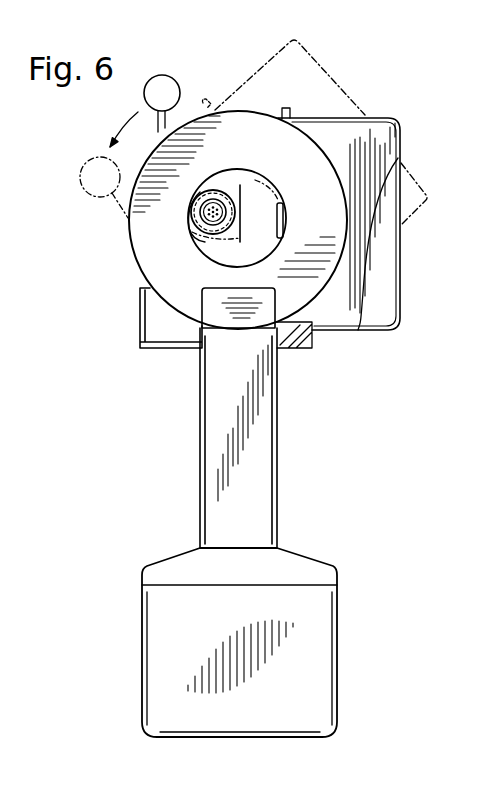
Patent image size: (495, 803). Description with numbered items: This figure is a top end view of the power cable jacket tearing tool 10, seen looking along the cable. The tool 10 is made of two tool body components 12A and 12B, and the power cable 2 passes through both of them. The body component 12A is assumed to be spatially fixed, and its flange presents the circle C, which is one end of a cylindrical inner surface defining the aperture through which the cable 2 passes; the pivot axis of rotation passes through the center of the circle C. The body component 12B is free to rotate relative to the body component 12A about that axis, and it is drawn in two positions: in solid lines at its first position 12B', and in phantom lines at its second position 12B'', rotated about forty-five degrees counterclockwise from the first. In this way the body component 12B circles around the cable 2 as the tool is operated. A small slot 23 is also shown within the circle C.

The power cable jacket tearing tool 10 is at (240, 95).
The tool body component 12A is at (313, 445).
The tool body component 12B is at (356, 254).
The first position of tool body component 12B' is at (445, 222).
The second position of tool body component 12B'' is at (324, 77).
The power cable 2 is at (213, 191).
The slot 23 is at (277, 220).
The circle C is at (200, 258).